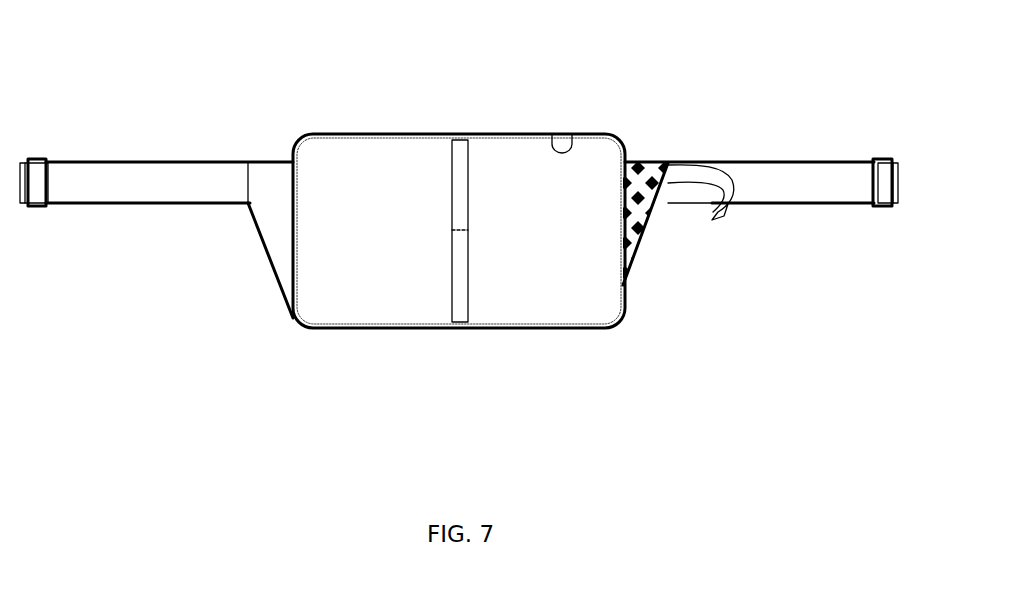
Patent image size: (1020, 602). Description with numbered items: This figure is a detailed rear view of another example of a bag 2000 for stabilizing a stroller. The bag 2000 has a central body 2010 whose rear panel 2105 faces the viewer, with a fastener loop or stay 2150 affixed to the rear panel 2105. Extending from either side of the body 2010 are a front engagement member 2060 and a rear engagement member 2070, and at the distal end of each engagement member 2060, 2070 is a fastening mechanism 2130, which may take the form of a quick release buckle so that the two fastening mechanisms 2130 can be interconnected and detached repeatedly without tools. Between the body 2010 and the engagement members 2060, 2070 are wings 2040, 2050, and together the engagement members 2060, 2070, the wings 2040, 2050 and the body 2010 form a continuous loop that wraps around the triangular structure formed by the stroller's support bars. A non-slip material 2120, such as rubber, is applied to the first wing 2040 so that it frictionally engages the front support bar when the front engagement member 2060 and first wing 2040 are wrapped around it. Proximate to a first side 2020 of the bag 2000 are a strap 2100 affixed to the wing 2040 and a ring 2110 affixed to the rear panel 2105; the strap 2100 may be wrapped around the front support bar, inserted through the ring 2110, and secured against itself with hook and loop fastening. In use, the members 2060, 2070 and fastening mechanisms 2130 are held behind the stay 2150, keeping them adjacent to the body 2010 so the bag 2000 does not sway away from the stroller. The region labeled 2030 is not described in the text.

The bag 2000 is at (628, 373).
The body 2010 is at (296, 321).
The first side 2020 is at (664, 267).
The left end portion 2030 is at (262, 292).
The first wing 2040 is at (655, 226).
The wing 2050 is at (258, 222).
The front engagement member 2060 is at (846, 162).
The rear engagement member 2070 is at (102, 163).
The strap 2100 is at (720, 163).
The rear panel 2105 is at (409, 245).
The ring 2110 is at (571, 136).
The non-slip material 2120 is at (652, 162).
The fastening mechanisms 2130 is at (37, 160).
The stay 2150 is at (452, 304).